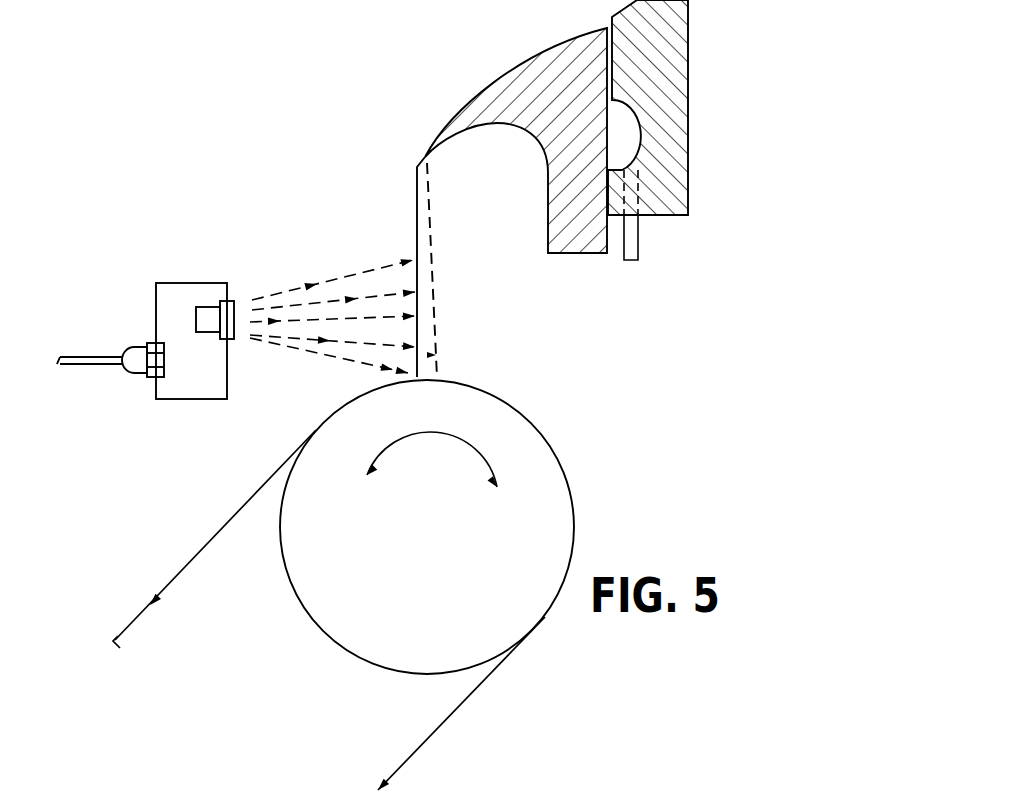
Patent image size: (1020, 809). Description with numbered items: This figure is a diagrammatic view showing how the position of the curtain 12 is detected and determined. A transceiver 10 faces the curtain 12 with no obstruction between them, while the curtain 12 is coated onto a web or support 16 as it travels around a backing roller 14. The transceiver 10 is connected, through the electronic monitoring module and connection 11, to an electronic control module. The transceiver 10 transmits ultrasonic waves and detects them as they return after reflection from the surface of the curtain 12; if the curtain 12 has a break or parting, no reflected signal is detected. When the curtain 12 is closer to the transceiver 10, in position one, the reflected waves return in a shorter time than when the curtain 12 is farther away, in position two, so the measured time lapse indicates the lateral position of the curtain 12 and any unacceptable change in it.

The transceiver 10 is at (185, 282).
The connection 11 is at (88, 355).
The curtain 12 is at (417, 212).
The backing roller 14 is at (415, 538).
The web or support 16 is at (243, 502).